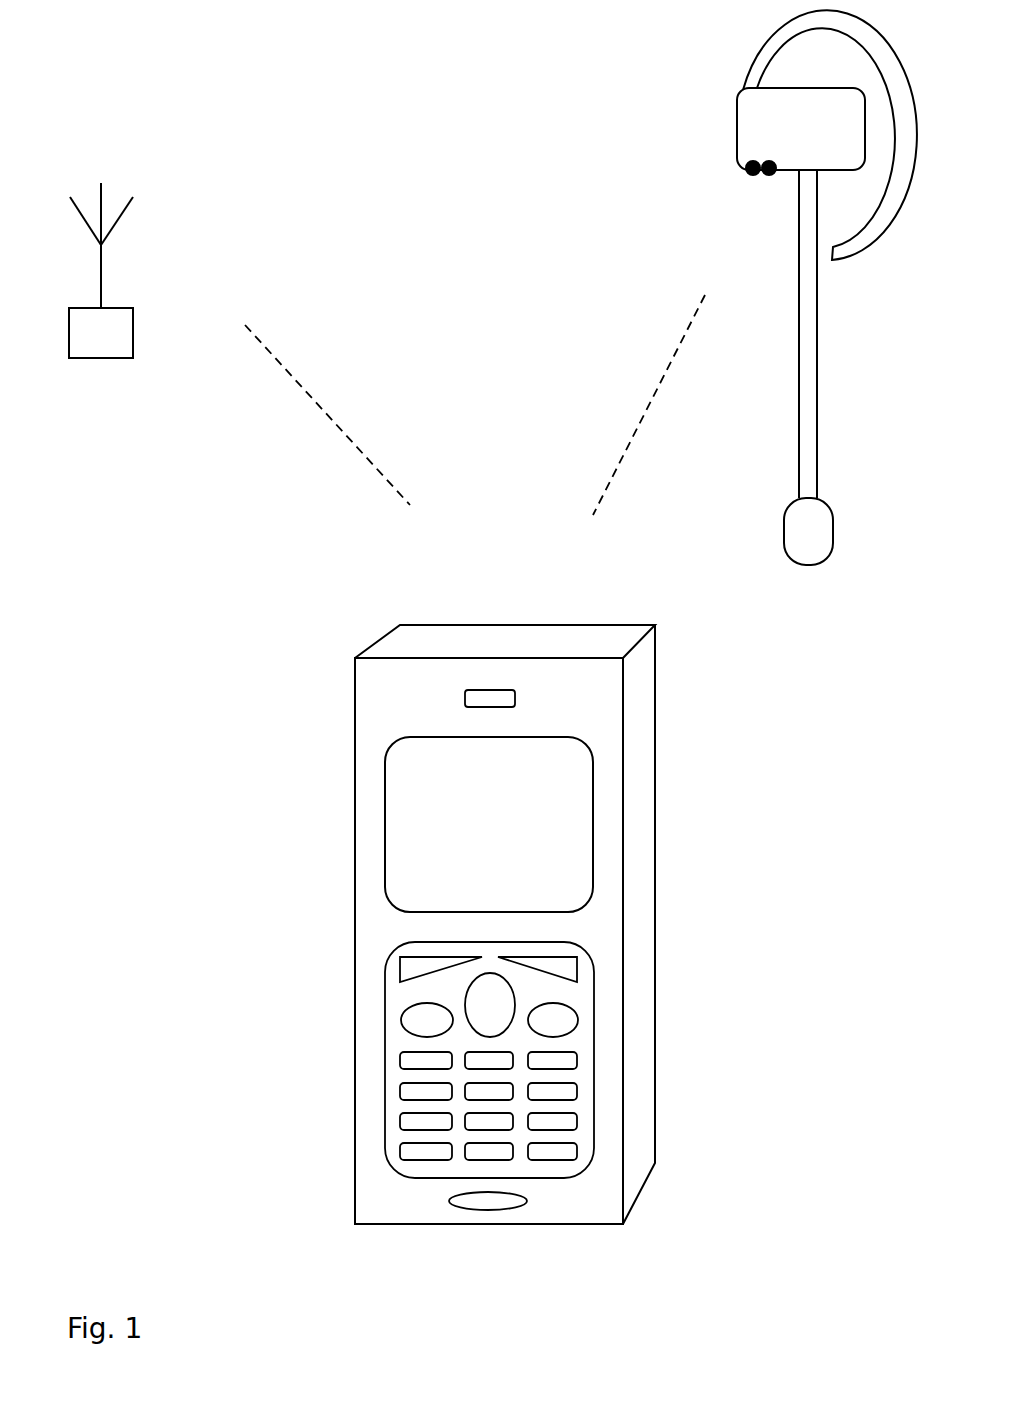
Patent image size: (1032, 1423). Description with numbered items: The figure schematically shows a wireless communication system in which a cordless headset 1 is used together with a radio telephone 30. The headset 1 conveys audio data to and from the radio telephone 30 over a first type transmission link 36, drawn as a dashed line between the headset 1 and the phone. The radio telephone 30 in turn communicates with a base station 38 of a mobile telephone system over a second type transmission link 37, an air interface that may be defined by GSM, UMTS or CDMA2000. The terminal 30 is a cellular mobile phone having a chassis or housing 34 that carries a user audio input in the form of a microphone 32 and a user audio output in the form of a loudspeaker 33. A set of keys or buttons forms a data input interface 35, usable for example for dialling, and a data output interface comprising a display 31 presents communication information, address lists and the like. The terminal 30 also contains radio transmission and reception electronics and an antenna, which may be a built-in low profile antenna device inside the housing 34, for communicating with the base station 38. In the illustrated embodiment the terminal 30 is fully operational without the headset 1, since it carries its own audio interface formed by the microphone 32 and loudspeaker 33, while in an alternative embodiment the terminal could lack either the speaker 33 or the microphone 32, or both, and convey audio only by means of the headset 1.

The headset 1 is at (705, 152).
The radio telephone 30 is at (703, 880).
The display 31 is at (505, 793).
The microphone 32 is at (482, 1210).
The loudspeaker 33 is at (465, 700).
The housing 34 is at (355, 685).
The data input interface 35 is at (397, 1002).
The first type transmission link 36 is at (660, 412).
The cellular radio link 37 is at (307, 373).
The base station 38 is at (183, 200).